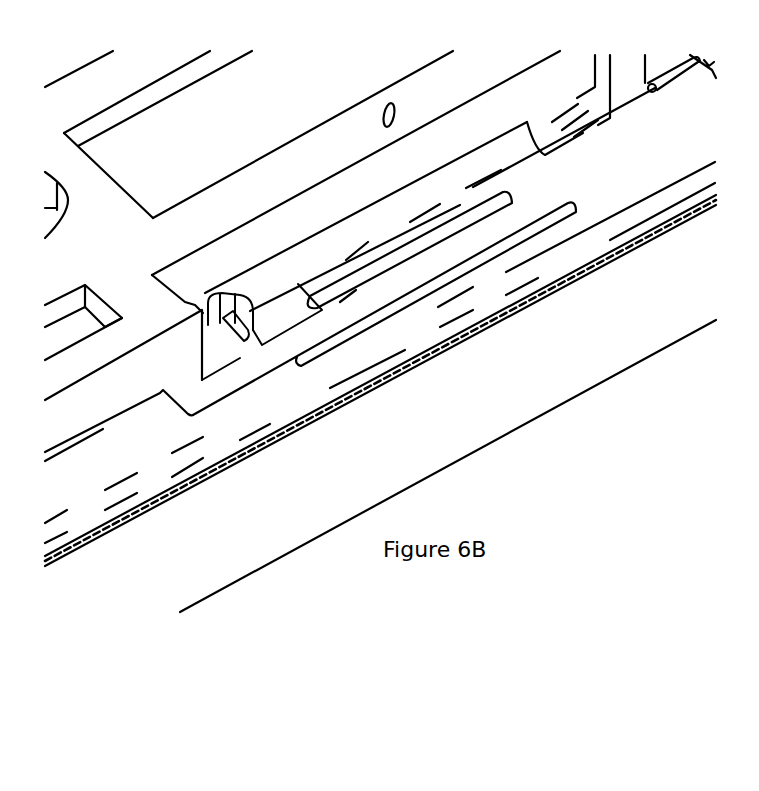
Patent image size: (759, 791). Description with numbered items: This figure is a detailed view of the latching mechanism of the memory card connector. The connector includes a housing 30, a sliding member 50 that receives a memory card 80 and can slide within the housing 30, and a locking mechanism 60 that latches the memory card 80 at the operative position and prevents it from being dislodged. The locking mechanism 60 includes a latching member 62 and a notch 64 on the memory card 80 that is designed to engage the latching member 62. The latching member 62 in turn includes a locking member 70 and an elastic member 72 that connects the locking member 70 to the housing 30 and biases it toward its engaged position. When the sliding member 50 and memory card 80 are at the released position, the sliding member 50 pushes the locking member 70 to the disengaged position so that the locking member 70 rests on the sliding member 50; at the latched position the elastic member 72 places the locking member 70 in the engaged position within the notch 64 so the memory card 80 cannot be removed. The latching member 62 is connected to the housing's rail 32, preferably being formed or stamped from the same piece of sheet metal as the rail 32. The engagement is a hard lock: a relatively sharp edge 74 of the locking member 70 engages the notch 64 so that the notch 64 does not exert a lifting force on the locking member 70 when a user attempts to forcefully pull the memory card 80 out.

The housing 30 is at (234, 131).
The rail 32 is at (638, 190).
The sliding member 50 is at (213, 388).
The locking mechanism 60 is at (458, 358).
The latching member 62 is at (413, 268).
The notch 64 is at (218, 312).
The locking member 70 is at (266, 358).
The elastic member 72 is at (353, 302).
The sharp edge 74 is at (237, 320).
The memory card 80 is at (381, 222).